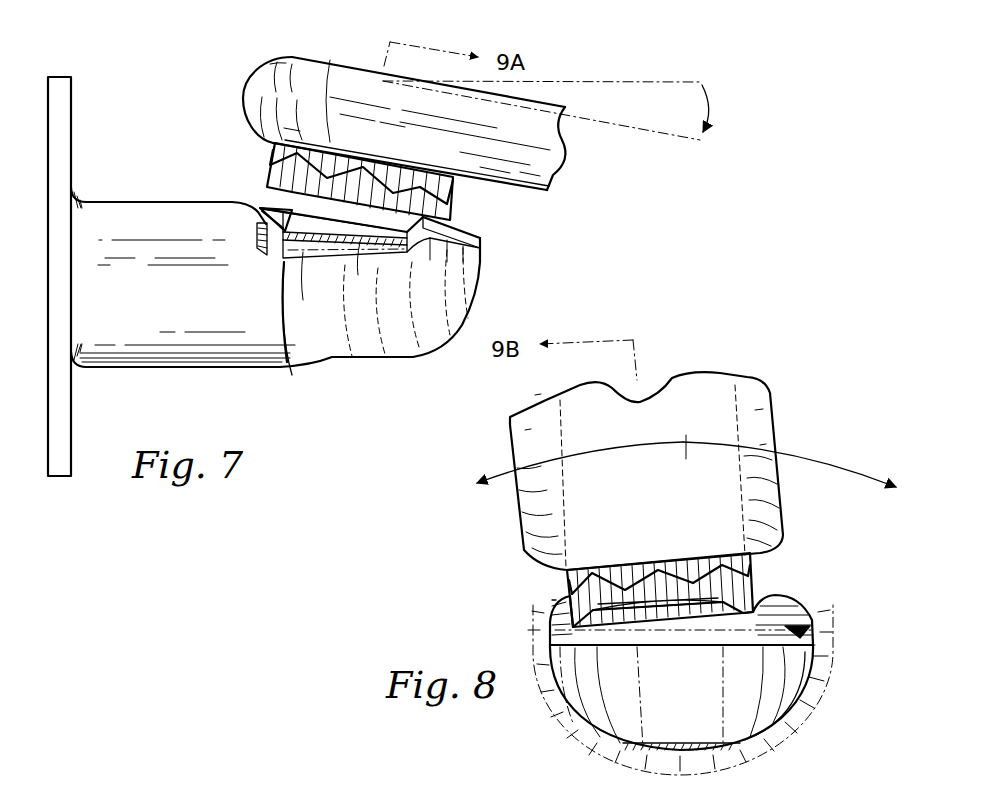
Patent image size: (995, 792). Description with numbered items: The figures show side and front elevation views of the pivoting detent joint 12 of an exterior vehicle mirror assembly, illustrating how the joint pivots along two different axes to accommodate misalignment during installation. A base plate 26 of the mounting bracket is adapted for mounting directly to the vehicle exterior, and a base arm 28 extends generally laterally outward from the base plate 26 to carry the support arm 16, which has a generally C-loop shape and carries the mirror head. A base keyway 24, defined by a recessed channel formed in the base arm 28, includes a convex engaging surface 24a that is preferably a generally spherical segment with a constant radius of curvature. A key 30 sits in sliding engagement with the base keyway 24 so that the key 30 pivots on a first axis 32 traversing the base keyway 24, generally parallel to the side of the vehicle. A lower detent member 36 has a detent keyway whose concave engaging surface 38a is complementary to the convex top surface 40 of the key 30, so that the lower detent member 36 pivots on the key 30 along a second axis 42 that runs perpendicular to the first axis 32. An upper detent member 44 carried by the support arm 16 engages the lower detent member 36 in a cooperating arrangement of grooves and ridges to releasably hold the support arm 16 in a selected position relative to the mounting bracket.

In FIG. 8, the pivoting detent joint 12 is at (555, 591).
In FIG. 7, the support arm 16 is at (280, 68).
In FIG. 8, the support arm 16 is at (740, 385).
In FIG. 7, the base keyway 24 is at (420, 223).
In FIG. 8, the base keyway 24 is at (805, 628).
In FIG. 7, the convex engaging surface 24a is at (350, 240).
In FIG. 7, the base plate 26 is at (58, 76).
In FIG. 7, the base arm 28 is at (98, 208).
In FIG. 8, the base arm 28 is at (745, 692).
In FIG. 7, the key 30 is at (276, 198).
In FIG. 8, the key 30 is at (673, 608).
In FIG. 8, the first axis 32 is at (795, 450).
In FIG. 7, the lower detent member 36 is at (264, 180).
In FIG. 8, the lower detent member 36 is at (755, 590).
In FIG. 7, the concave engaging surface 38a is at (283, 265).
In FIG. 7, the convex top surface 40 is at (290, 205).
In FIG. 7, the second axis 42 is at (711, 103).
In FIG. 7, the upper detent member 44 is at (272, 155).
In FIG. 8, the upper detent member 44 is at (750, 564).